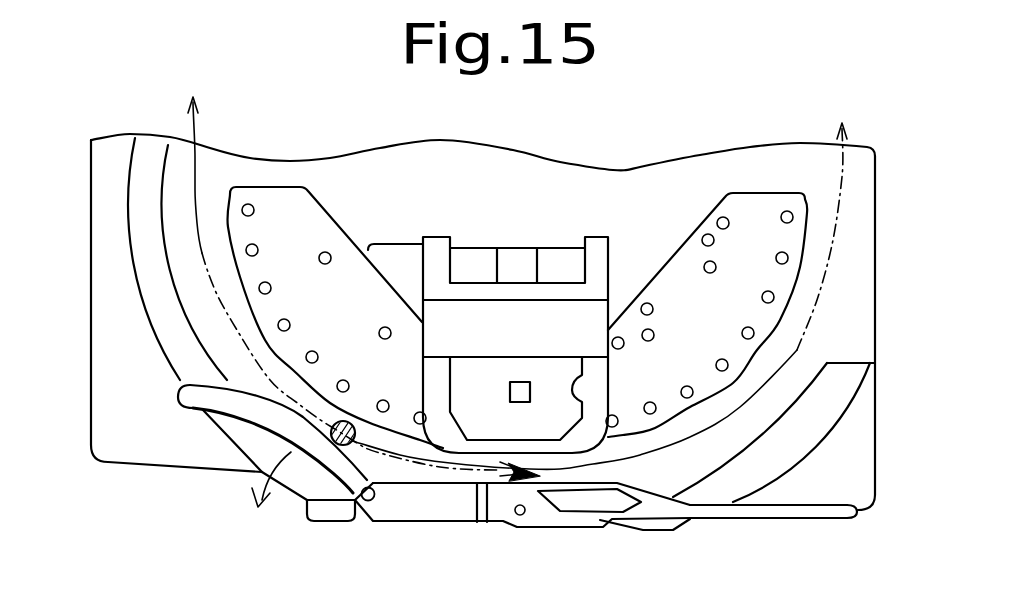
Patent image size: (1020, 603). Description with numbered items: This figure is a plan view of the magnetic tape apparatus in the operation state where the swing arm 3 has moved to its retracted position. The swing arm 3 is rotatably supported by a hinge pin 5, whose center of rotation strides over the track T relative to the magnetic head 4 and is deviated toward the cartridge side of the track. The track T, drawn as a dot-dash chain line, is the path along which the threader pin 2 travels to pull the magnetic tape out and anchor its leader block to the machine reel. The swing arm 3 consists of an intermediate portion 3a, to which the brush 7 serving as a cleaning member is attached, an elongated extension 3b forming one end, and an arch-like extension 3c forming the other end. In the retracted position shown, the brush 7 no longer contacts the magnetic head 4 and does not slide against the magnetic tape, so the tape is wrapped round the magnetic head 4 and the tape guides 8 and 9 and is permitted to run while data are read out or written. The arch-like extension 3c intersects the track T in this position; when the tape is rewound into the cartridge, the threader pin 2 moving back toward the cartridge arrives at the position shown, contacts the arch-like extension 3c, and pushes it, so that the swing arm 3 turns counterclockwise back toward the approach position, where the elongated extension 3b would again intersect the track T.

The track T is at (207, 297).
The threader pin 2 is at (343, 445).
The swing arm 3 is at (462, 510).
The intermediate portion 3a is at (445, 498).
The elongated extension 3b is at (748, 513).
The arch-like extension 3c is at (232, 405).
The magnetic head 4 is at (493, 430).
The hinge pin 5 is at (370, 500).
The brush 7 is at (520, 477).
The tape guide 8 is at (288, 203).
The tape guide 9 is at (773, 280).